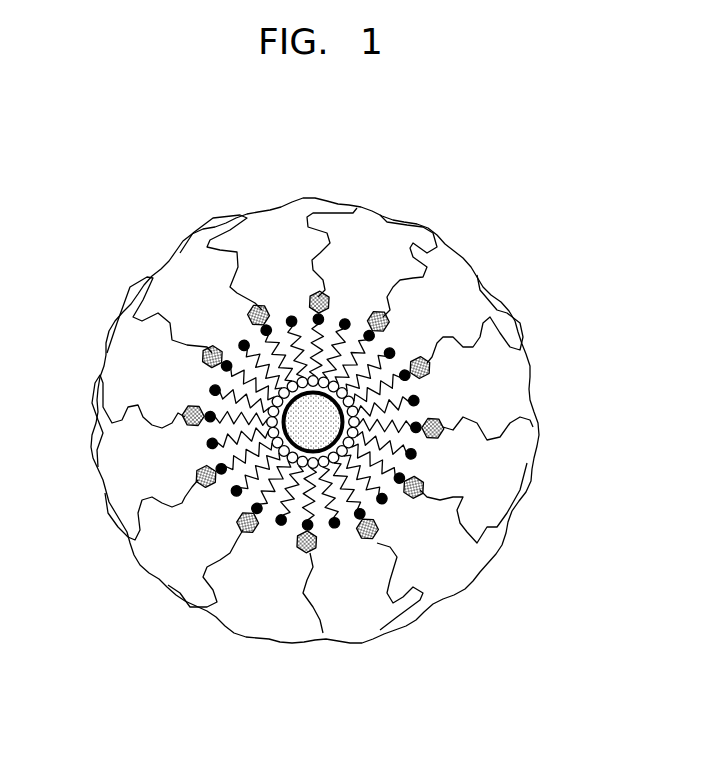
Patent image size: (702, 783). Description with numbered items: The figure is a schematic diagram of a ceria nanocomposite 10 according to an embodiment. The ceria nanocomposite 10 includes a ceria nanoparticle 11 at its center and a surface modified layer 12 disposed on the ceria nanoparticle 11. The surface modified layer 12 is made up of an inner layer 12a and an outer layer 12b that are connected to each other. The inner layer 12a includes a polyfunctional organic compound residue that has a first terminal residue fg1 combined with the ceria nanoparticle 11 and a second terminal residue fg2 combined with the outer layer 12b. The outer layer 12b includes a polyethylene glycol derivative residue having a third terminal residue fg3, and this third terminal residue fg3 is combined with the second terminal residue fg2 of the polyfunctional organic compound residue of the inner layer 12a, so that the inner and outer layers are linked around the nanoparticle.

The ceria nanocomposite 10 is at (505, 225).
The ceria nanoparticle 11 is at (305, 428).
The surface modified layer 12 is at (182, 678).
The inner layer 12a is at (228, 498).
The outer layer 12b is at (195, 613).
The first terminal residue fg1 is at (334, 384).
The second terminal residue fg2 is at (421, 399).
The third terminal residue fg3 is at (441, 437).